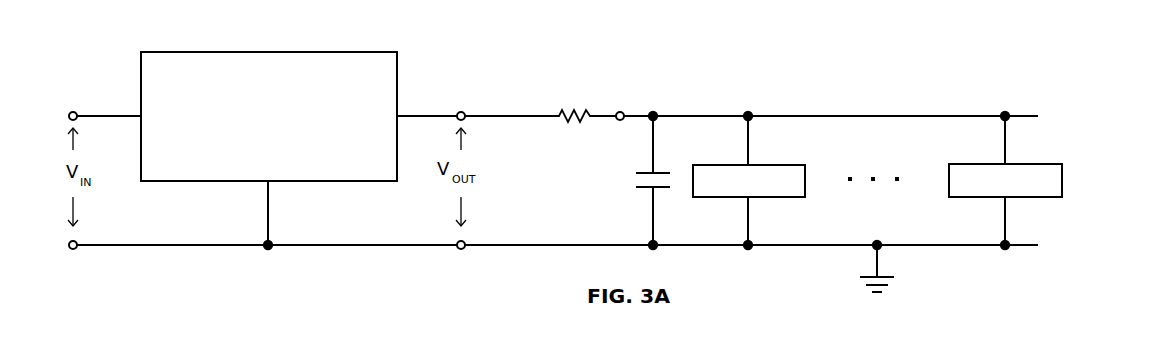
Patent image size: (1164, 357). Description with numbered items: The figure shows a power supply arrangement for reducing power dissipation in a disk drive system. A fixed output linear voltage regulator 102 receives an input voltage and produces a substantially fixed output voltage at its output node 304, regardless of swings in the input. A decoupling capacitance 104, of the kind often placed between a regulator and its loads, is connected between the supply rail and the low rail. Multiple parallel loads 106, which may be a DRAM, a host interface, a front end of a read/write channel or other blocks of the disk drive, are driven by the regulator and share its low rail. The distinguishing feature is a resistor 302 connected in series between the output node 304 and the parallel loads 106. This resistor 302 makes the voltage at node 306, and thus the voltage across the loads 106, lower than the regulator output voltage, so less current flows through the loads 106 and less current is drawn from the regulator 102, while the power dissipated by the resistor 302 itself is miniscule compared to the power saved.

The fixed output linear voltage regulator 102 is at (365, 52).
The decoupling capacitance 104 is at (668, 192).
The loads 106 is at (788, 165).
The resistor 302 is at (572, 127).
The output node 304 is at (462, 111).
The node 306 is at (621, 111).